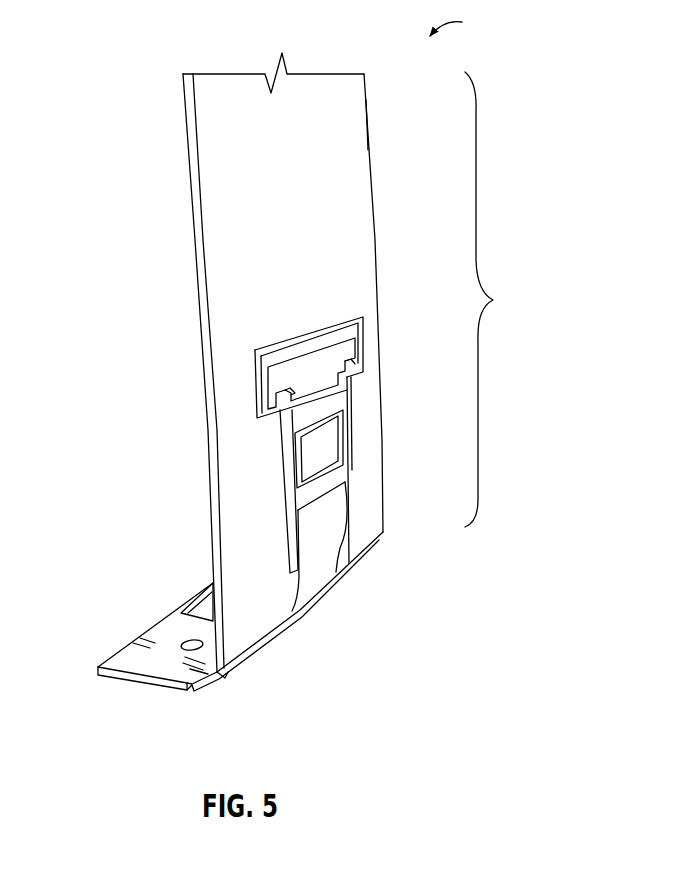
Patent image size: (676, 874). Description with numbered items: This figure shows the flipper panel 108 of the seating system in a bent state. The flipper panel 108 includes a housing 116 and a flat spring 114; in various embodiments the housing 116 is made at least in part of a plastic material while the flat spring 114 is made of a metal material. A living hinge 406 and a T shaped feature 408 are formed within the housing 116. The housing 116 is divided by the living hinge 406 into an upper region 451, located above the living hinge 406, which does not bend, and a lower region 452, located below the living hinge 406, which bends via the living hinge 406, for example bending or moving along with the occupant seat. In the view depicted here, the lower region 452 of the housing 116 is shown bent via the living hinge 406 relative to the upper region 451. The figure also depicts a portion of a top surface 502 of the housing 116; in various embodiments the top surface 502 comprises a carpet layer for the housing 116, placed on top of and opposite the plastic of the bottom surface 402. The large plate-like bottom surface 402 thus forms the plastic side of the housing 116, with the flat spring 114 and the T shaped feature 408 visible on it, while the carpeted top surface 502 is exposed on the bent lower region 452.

The flipper panel 108 is at (466, 22).
The housing 116 is at (360, 122).
The bottom surface 402 is at (360, 156).
The upper region 451 is at (501, 299).
The T shaped feature 408 is at (250, 393).
The flat spring 114 is at (318, 577).
The lower region 452 is at (195, 708).
The top surface 502 is at (123, 647).
The living hinge 406 is at (218, 678).